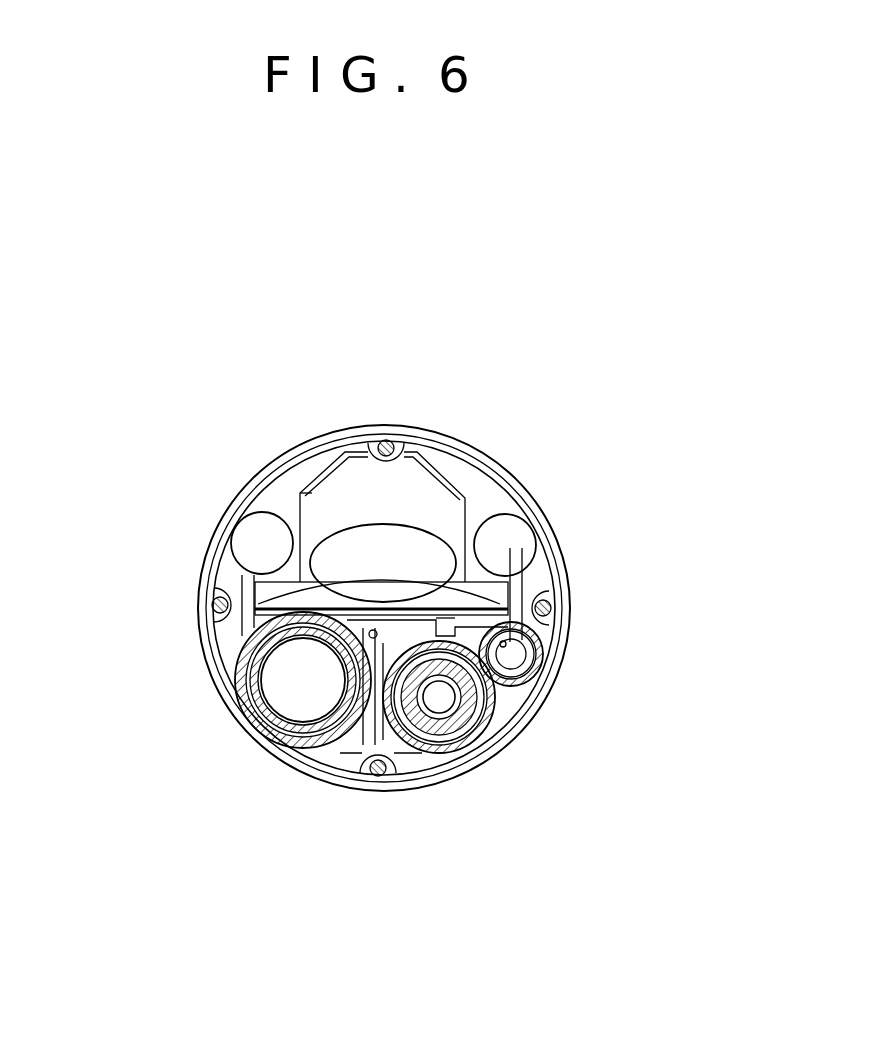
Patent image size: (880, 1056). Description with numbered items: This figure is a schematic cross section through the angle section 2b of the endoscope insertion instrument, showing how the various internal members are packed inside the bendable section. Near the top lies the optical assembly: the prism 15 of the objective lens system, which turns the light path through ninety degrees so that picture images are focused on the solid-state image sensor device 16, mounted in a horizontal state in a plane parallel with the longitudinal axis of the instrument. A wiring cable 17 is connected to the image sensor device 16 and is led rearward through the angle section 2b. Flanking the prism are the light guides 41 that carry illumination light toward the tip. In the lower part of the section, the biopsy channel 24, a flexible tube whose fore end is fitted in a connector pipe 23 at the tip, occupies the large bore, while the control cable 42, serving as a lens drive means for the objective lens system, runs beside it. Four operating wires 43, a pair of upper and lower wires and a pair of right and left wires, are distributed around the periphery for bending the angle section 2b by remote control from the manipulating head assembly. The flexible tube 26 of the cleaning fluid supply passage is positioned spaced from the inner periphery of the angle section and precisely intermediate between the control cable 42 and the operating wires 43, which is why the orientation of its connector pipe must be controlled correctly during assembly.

The angle section 2b is at (583, 543).
The prism 15 is at (357, 483).
The solid-state image sensor device 16 is at (266, 590).
The wiring cable 17 is at (418, 548).
The connector pipe 23 is at (272, 732).
The biopsy channel 24 is at (248, 690).
The flexible tube 26 is at (538, 678).
The light guides 41 is at (253, 520).
The control cable 42 is at (450, 738).
The operating wires 43 is at (388, 440).